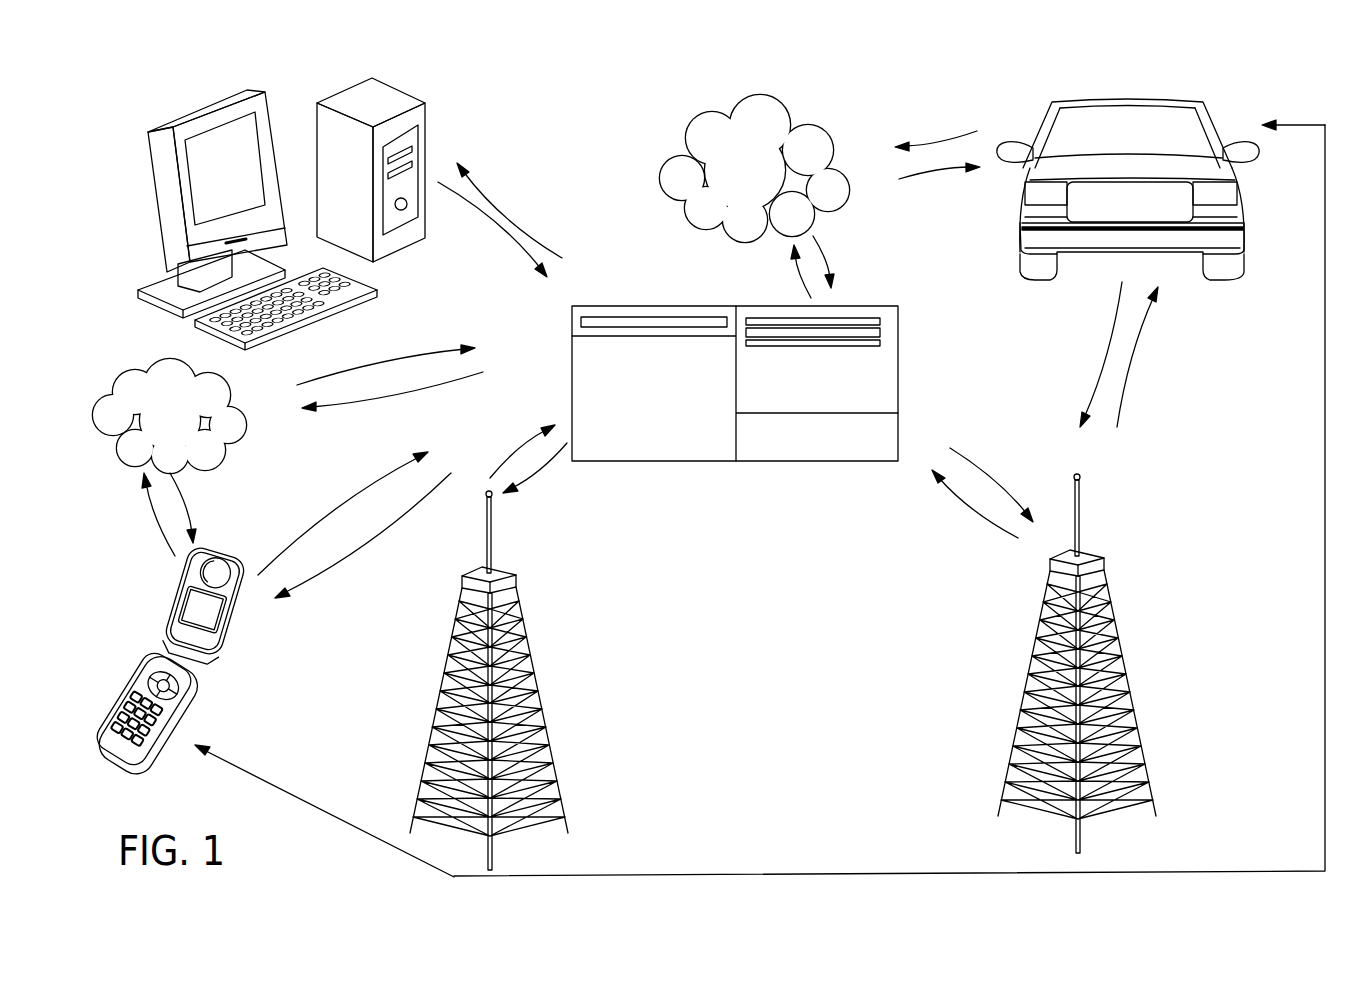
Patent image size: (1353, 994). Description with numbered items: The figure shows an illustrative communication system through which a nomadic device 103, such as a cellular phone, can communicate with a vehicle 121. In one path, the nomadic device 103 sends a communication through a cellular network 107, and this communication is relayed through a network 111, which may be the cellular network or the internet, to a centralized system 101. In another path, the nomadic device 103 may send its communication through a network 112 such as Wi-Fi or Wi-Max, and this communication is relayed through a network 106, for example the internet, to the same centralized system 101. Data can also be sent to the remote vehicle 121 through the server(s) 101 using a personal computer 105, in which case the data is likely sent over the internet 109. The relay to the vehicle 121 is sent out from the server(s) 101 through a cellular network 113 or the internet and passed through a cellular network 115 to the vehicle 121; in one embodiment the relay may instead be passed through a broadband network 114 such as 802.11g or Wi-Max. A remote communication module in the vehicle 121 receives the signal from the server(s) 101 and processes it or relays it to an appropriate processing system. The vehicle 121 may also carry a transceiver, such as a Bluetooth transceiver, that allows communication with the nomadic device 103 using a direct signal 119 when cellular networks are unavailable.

The centralized system 101 is at (654, 462).
The nomadic device 103 is at (184, 577).
The personal computer 105 is at (200, 113).
The network 106 is at (175, 369).
The cellular network 107 is at (339, 498).
The internet 109 is at (520, 200).
The network 111 is at (508, 457).
The network 112 is at (186, 502).
The cellular network 113 is at (972, 513).
The broadband network 114 is at (807, 133).
The cellular network 115 is at (1095, 342).
The direct signal 119 is at (773, 870).
The vehicle 121 is at (1117, 100).